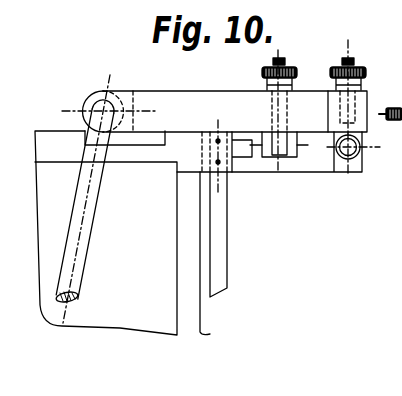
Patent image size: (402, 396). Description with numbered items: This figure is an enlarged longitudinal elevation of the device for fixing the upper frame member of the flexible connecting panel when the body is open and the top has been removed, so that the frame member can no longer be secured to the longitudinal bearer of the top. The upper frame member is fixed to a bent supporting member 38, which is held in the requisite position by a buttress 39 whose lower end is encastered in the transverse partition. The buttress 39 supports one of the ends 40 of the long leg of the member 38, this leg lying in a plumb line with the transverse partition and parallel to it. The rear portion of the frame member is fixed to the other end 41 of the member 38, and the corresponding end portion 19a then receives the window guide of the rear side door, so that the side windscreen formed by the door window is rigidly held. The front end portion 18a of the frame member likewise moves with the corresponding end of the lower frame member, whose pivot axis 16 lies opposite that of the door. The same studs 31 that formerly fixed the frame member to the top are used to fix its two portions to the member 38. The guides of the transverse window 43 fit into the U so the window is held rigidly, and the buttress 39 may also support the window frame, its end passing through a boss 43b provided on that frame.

The pivot axis 16 is at (244, 176).
The end part of upper frame member 18a is at (228, 176).
The end part of upper frame member 19a is at (349, 158).
The bolts 31 is at (283, 58).
The bent supporting member 38 is at (196, 110).
The buttress 39 is at (88, 233).
The end of long leg 40 is at (88, 97).
The other end of member 41 is at (357, 107).
The transverse window 43 is at (125, 310).
The boss 43b is at (85, 127).